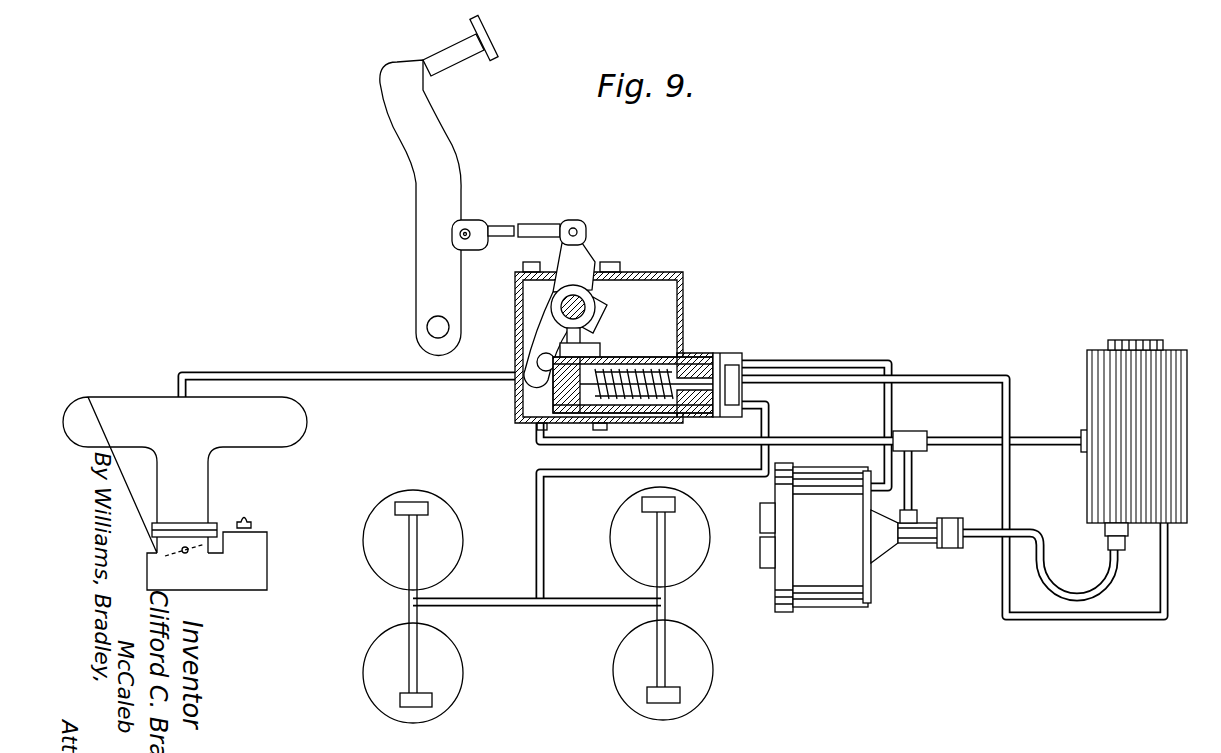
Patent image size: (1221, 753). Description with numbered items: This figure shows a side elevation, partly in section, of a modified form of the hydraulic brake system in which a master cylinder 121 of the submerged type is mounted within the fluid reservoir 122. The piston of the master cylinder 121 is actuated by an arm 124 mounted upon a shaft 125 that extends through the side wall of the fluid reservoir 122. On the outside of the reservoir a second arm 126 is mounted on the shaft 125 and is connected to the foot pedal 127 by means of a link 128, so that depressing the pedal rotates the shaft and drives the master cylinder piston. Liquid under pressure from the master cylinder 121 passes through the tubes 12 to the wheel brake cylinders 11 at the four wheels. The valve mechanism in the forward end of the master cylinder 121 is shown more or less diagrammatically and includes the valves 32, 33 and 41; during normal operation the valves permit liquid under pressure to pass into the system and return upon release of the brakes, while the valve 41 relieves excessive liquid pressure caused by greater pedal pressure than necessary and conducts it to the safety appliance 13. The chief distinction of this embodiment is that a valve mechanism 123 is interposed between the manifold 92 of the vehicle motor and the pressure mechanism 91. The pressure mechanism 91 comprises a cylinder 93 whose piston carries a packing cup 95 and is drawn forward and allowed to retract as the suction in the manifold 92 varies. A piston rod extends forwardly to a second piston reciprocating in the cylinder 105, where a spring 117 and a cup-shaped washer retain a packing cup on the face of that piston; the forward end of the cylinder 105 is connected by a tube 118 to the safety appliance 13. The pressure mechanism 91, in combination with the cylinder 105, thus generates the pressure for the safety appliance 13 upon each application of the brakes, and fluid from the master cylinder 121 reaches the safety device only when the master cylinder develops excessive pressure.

The wheel brake cylinders 11 is at (420, 508).
The tubes 12 is at (762, 412).
The safety appliance 13 is at (1086, 392).
The valve 32 is at (650, 368).
The valve 33 is at (693, 402).
The valve 41 is at (713, 362).
The pressure mechanism 91 is at (870, 593).
The manifold 92 is at (125, 402).
The cylinder 93 is at (870, 541).
The packing cup 95 is at (812, 342).
The cylinder 105 is at (932, 543).
The spring 117 is at (940, 374).
The tube 118 is at (1058, 500).
The master cylinder 121 is at (649, 381).
The fluid reservoir 122 is at (673, 273).
The valve mechanism 123 is at (597, 348).
The arm 124 is at (547, 338).
The shaft 125 is at (593, 303).
The arm 126 is at (587, 247).
The foot pedal 127 is at (442, 152).
The link 128 is at (533, 223).